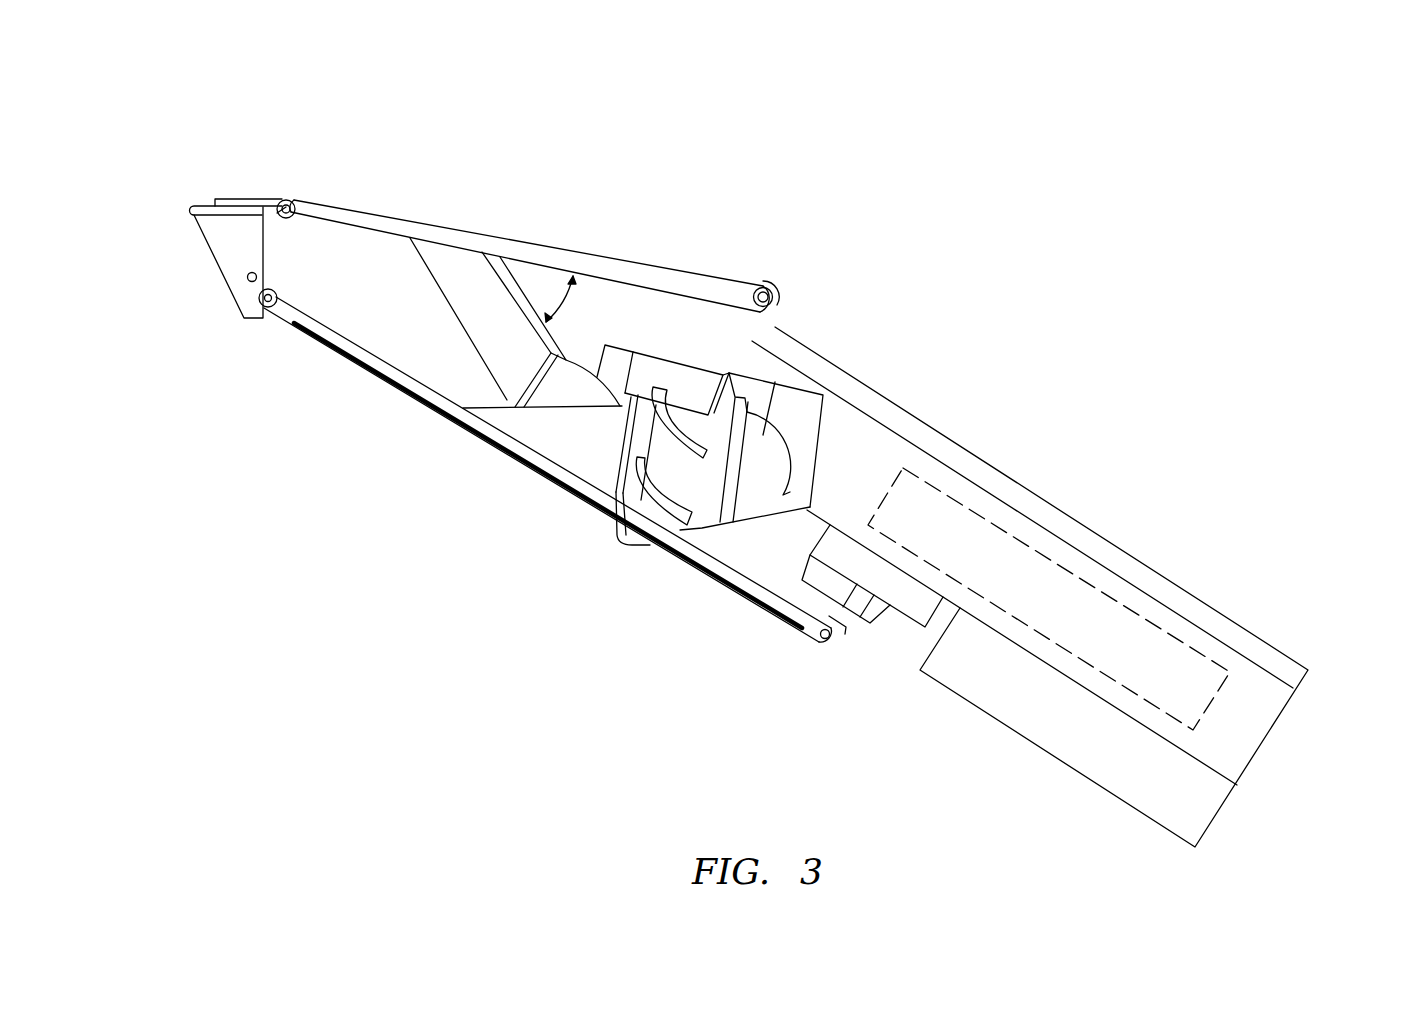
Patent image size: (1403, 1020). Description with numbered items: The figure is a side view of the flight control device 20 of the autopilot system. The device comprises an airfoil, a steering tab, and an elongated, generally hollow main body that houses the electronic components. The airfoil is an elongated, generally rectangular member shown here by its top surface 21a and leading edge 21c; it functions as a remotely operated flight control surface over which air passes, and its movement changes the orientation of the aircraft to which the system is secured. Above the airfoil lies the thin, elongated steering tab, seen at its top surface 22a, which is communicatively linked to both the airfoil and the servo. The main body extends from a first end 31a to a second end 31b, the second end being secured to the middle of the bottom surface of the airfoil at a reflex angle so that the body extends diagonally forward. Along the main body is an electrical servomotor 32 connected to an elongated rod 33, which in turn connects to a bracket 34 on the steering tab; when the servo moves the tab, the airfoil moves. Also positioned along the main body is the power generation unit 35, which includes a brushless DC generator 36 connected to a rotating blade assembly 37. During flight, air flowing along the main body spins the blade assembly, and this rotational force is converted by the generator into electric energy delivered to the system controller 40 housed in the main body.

The flight control device 20 is at (218, 130).
The top surface 21a is at (437, 221).
The leading edge 21c is at (790, 301).
The top surface 22a is at (264, 200).
The first end 31a is at (1255, 742).
The second end 31b is at (409, 254).
The servomotor 32 is at (875, 636).
The elongated rod 33 is at (417, 403).
The bracket 34 is at (230, 267).
The power generation unit 35 is at (679, 663).
The brushless DC generator 36 is at (747, 502).
The rotating blade assembly 37 is at (617, 555).
The system controller 40 is at (1035, 592).